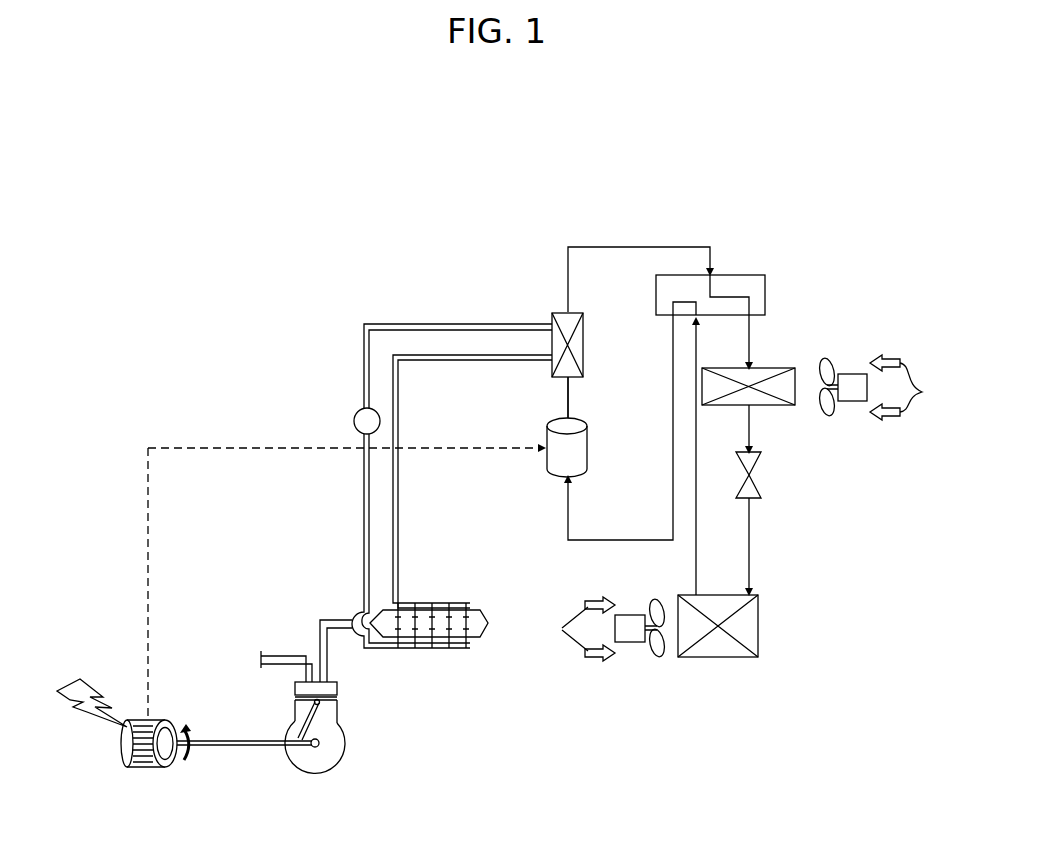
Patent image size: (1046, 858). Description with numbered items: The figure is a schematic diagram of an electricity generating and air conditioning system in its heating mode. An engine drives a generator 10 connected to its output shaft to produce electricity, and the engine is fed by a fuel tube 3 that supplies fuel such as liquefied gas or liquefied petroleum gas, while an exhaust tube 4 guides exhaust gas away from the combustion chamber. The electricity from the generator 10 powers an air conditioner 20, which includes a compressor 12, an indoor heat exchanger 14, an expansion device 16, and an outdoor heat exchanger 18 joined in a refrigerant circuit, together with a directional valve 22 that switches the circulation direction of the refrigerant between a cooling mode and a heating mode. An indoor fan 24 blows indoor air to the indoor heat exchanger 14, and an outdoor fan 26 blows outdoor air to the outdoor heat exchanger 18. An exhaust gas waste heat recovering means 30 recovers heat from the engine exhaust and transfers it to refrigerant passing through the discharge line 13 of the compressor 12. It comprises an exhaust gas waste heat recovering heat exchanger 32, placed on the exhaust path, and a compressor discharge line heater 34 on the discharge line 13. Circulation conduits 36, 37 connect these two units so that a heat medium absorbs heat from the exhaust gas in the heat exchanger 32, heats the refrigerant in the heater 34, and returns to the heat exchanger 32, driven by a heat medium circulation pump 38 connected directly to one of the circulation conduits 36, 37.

The fuel tube 3 is at (283, 656).
The exhaust tube 4 is at (320, 626).
The generator 10 is at (135, 770).
The compressor 12 is at (589, 456).
The discharge line 13 is at (571, 384).
The indoor heat exchanger 14 is at (781, 368).
The expansion device 16 is at (754, 488).
The outdoor heat exchanger 18 is at (759, 605).
The air conditioner 20 is at (809, 206).
The directional valve 22 is at (764, 277).
The indoor fan 24 is at (831, 416).
The outdoor fan 26 is at (656, 652).
The exhaust gas waste heat recovering means 30 is at (411, 474).
The exhaust gas waste heat recovering heat exchanger 32 is at (432, 649).
The compressor discharge line heater 34 is at (551, 325).
The circulation conduit 36 is at (363, 368).
The circulation conduit 37 is at (399, 400).
The heat medium circulation pump 38 is at (354, 421).